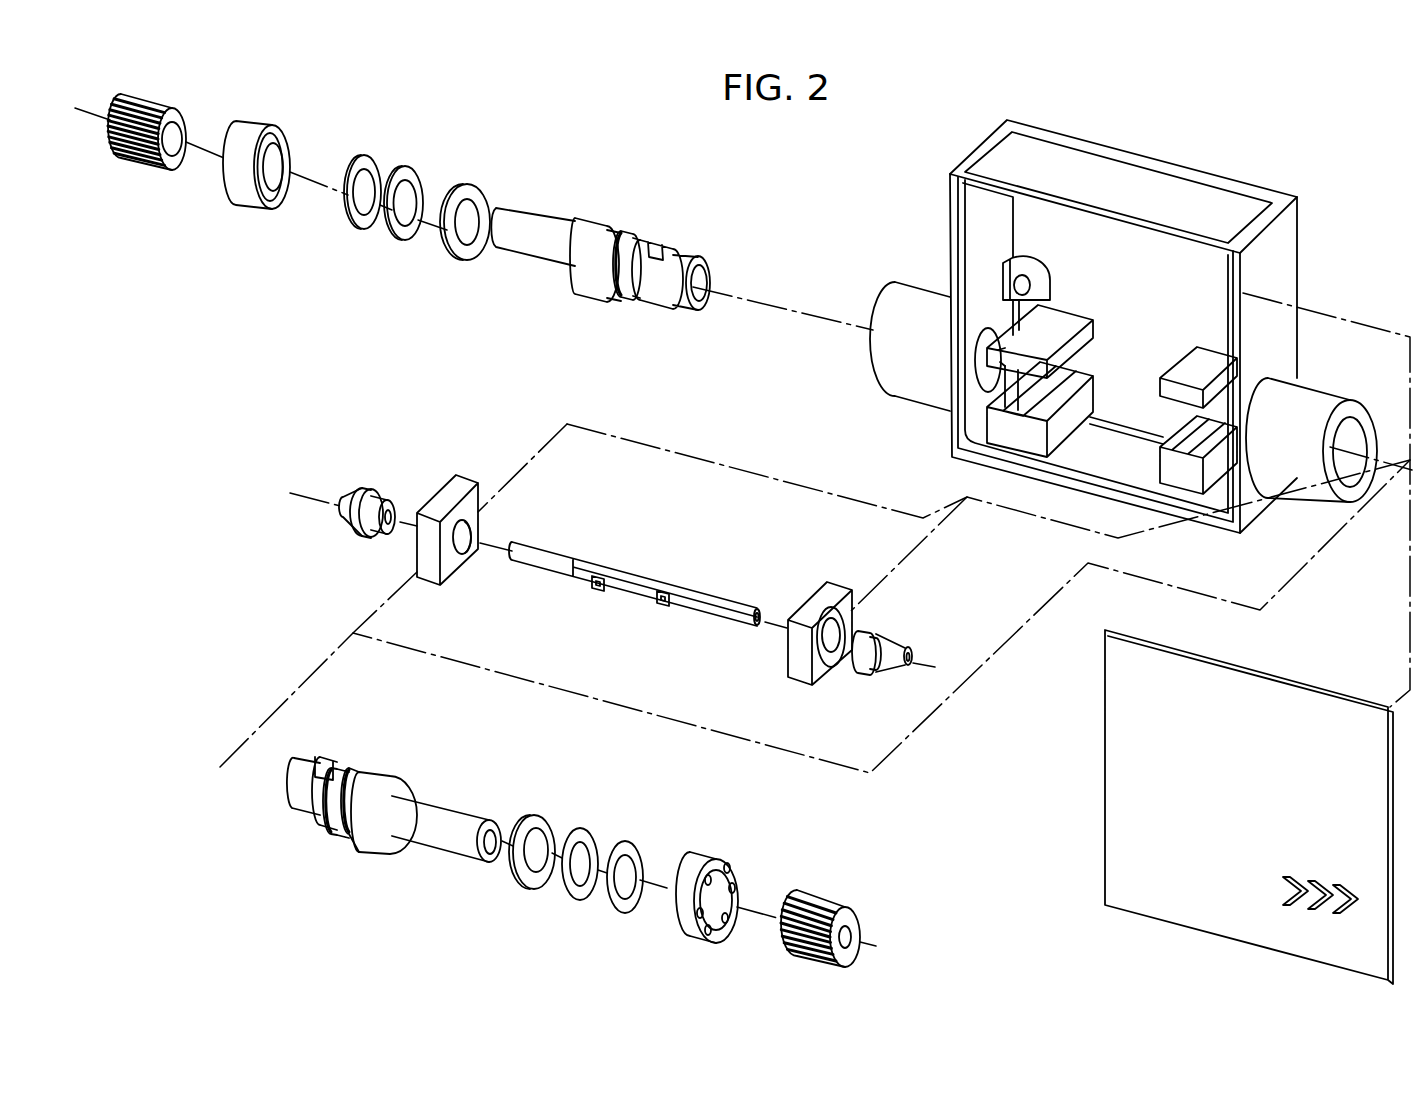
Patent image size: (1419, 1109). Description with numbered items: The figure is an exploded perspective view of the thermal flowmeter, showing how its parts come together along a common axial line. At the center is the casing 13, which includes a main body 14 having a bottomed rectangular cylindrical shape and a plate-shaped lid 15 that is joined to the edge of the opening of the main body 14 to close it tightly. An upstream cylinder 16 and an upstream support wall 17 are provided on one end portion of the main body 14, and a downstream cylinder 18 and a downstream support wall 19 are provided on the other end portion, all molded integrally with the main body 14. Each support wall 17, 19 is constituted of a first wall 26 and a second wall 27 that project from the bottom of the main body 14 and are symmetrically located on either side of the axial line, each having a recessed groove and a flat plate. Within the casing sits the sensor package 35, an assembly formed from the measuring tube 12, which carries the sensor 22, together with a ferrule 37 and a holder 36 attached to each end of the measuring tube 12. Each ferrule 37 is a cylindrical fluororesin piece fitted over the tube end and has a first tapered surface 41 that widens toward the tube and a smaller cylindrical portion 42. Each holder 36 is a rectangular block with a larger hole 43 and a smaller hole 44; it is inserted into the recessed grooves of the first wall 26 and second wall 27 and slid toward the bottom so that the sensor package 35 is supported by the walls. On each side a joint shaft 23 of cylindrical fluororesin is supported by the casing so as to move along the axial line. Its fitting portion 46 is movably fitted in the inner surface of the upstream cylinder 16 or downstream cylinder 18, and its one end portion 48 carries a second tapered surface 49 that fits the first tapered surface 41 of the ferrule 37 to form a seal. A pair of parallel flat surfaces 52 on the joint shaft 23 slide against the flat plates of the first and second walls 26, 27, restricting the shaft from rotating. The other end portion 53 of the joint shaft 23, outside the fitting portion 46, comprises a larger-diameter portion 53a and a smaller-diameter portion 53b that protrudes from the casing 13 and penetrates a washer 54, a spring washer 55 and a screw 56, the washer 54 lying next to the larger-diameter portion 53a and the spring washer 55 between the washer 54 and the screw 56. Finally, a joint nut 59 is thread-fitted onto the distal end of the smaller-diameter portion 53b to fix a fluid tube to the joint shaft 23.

The measuring tube 12 is at (634, 589).
The casing 13 is at (1146, 339).
The main body 14 is at (1222, 180).
The lid 15 is at (1125, 777).
The upstream cylinder 16 is at (883, 373).
The upstream support wall 17 is at (1072, 296).
The downstream cylinder 18 is at (1325, 403).
The downstream support wall 19 is at (1184, 354).
The sensor 22 is at (593, 587).
The joint shaft 23 is at (535, 522).
The first wall 26 is at (1032, 340).
The second wall 27 is at (1027, 447).
The sensor package 35 is at (420, 416).
The holder 36 is at (627, 610).
The ferrule 37 is at (358, 537).
The first tapered surface 41 is at (651, 588).
The cylindrical portion 42 is at (380, 500).
The larger hole 43 is at (837, 650).
The smaller hole 44 is at (649, 632).
The fitting portion 46 is at (650, 253).
The one end portion 48 is at (535, 494).
The second tapered surface 49 is at (697, 293).
The flat surfaces 52 is at (668, 248).
The other end portion 53 is at (485, 488).
The larger-diameter portion 53a is at (595, 228).
The smaller-diameter portion 53b is at (522, 222).
The washer 54 is at (448, 258).
The spring washer 55 is at (385, 230).
The screw 56 is at (243, 200).
The joint nut 59 is at (133, 158).